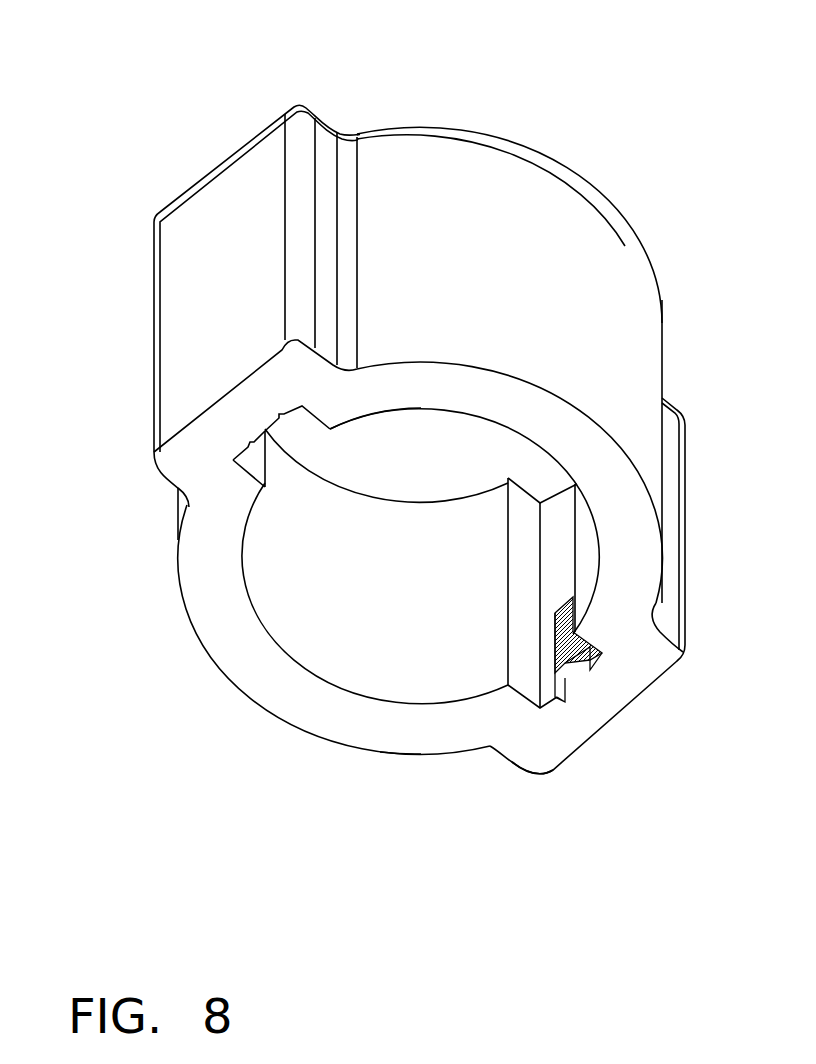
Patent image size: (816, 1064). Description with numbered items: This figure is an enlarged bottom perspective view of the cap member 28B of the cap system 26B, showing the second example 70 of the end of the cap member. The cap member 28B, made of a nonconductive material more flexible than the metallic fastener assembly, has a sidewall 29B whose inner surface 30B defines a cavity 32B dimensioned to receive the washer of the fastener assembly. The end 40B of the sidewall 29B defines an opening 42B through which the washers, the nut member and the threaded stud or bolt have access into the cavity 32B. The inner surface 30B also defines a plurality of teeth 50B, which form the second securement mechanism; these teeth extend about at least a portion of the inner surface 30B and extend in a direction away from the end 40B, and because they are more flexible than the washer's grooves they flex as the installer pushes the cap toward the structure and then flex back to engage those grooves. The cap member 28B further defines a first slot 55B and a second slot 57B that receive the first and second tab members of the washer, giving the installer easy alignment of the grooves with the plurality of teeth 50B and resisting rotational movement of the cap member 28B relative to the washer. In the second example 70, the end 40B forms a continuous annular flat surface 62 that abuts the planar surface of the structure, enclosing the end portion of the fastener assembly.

The cap system 26B is at (633, 100).
The cap member 28B is at (583, 210).
The sidewall 29B is at (597, 335).
The inner surface 30B is at (270, 550).
The cavity 32B is at (372, 548).
The end 40B is at (273, 688).
The opening 42B is at (410, 600).
The plurality of teeth 50B is at (557, 615).
The first slot 55B is at (557, 548).
The second slot 57B is at (277, 462).
The continuous annular flat surface 62 is at (548, 725).
The second example 70 is at (392, 775).